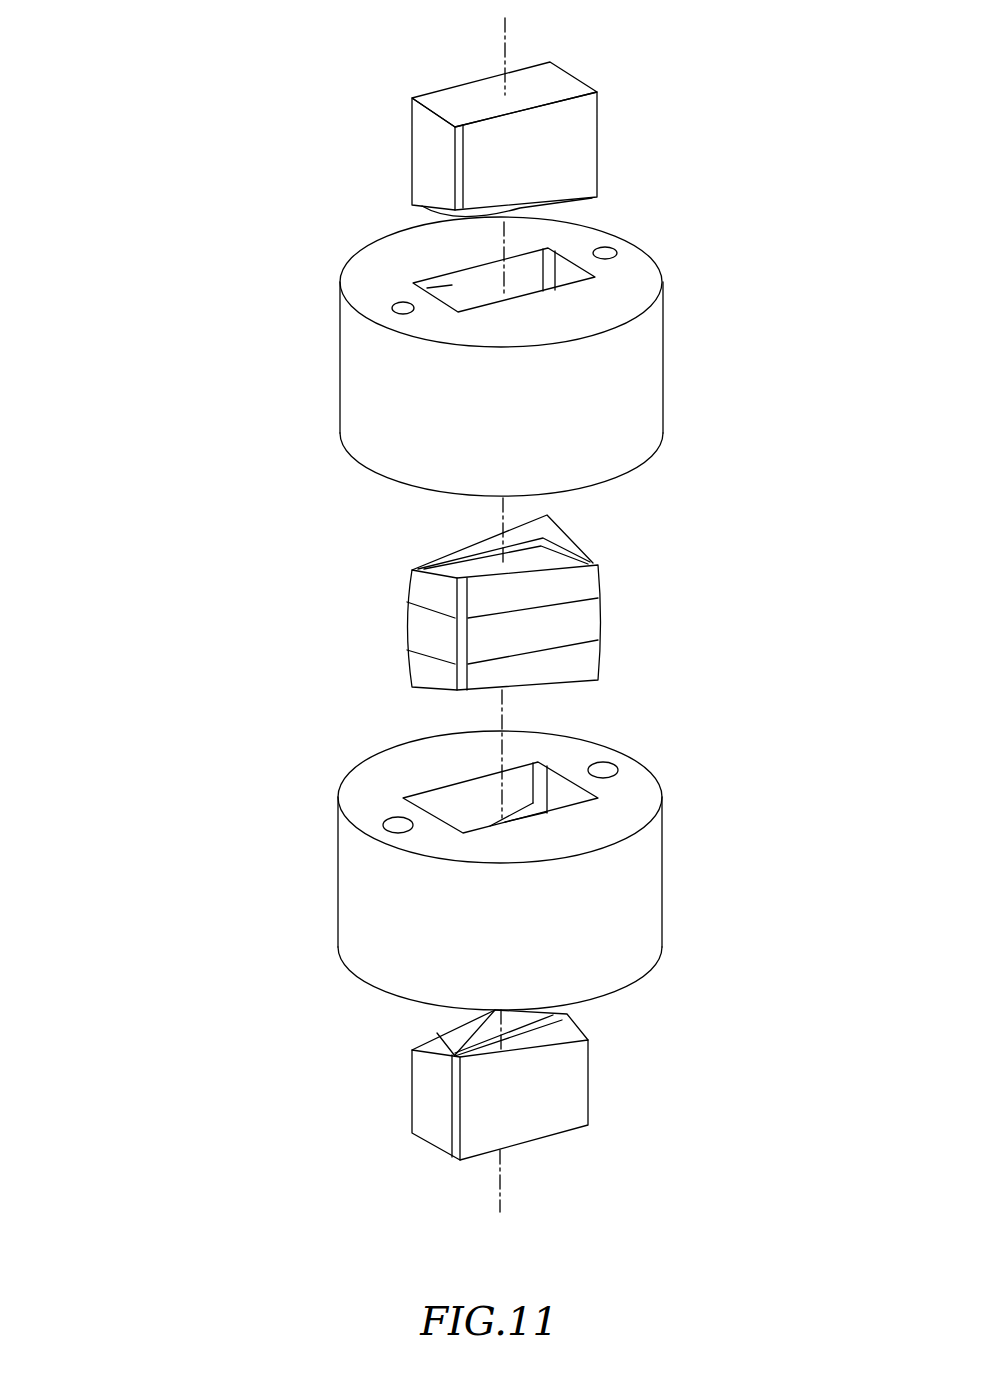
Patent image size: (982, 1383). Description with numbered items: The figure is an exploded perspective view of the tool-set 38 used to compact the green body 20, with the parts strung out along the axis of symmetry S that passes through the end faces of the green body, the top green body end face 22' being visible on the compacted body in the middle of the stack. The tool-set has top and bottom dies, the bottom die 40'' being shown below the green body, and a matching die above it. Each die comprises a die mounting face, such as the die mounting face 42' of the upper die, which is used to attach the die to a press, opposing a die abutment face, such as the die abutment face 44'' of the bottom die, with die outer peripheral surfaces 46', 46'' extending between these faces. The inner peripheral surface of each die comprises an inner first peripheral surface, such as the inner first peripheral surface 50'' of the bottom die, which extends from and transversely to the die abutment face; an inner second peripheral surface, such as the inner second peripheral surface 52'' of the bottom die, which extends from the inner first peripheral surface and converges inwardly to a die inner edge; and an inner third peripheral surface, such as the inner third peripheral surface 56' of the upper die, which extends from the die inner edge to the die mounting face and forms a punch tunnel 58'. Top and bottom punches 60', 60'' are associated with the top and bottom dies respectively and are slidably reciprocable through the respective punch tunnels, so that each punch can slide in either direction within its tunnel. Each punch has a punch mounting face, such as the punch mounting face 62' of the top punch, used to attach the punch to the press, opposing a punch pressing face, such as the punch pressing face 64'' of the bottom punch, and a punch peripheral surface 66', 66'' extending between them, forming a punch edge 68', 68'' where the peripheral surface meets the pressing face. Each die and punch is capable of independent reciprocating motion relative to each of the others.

The tool-set 38 is at (146, 342).
The axis of symmetry S is at (505, 30).
The green body 20 is at (579, 602).
The top green body end face 22' is at (544, 542).
The bottom die 40'' is at (519, 599).
The die mounting face 42' is at (485, 268).
The die abutment face 44'' is at (520, 760).
The die outer peripheral surface 46' is at (535, 389).
The die outer peripheral surface 46'' is at (557, 903).
The inner first peripheral surface 50'' is at (481, 745).
The inner second peripheral surface 52'' is at (599, 741).
The inner third peripheral surface 56' is at (481, 250).
The punch tunnel 58' is at (623, 240).
The top punch 60' is at (502, 124).
The bottom punch 60'' is at (515, 1078).
The punch mounting face 62' is at (537, 79).
The punch pressing face 64'' is at (565, 1023).
The punch peripheral surface 66' is at (386, 145).
The punch peripheral surface 66'' is at (383, 1105).
The punch edge 68' is at (444, 183).
The punch edge 68'' is at (578, 1040).